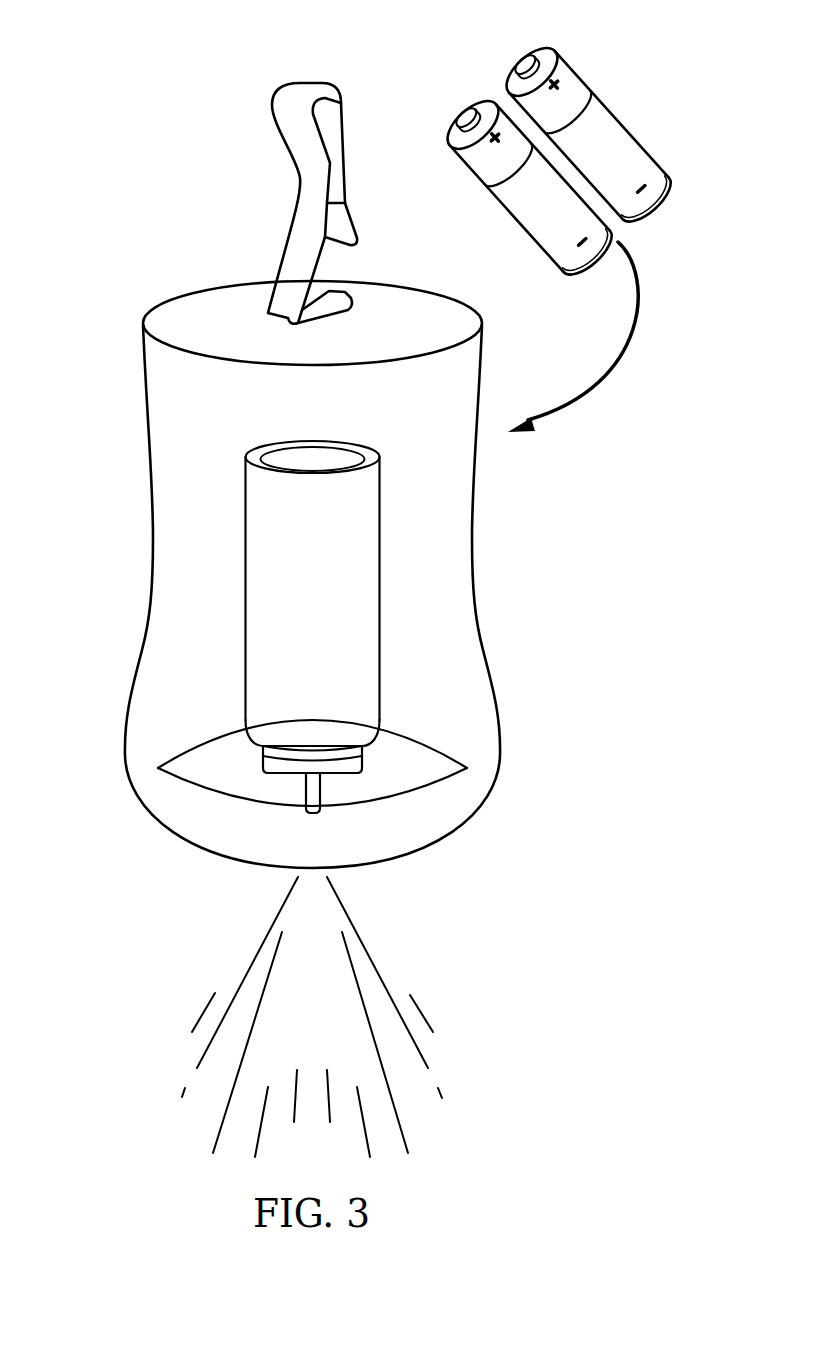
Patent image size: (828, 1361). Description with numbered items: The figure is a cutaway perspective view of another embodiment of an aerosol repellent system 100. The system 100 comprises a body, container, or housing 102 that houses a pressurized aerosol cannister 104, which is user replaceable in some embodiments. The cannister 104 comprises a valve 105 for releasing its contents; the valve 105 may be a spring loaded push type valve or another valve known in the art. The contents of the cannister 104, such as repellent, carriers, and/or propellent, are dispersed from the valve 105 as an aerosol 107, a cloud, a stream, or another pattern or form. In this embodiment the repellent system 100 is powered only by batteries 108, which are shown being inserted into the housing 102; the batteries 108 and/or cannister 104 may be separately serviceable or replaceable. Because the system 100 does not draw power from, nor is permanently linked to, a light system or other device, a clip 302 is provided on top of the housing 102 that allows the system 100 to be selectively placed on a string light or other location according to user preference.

The aerosol repellent system 100 is at (220, 283).
The housing 102 is at (153, 538).
The pressurized aerosol cannister 104 is at (335, 632).
The valve 105 is at (330, 780).
The aerosol 107 is at (403, 1123).
The batteries 108 is at (640, 102).
The clip 302 is at (302, 82).